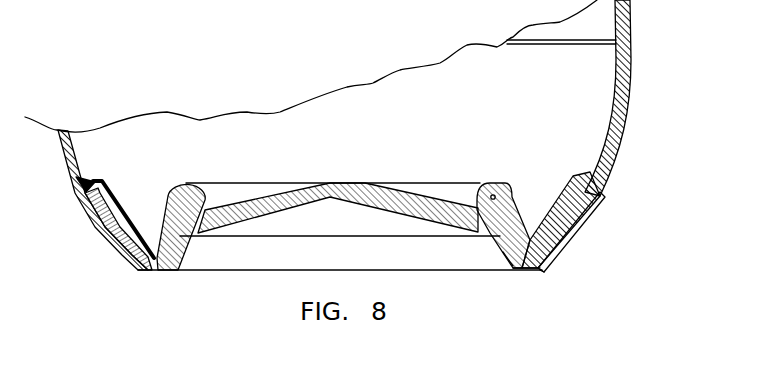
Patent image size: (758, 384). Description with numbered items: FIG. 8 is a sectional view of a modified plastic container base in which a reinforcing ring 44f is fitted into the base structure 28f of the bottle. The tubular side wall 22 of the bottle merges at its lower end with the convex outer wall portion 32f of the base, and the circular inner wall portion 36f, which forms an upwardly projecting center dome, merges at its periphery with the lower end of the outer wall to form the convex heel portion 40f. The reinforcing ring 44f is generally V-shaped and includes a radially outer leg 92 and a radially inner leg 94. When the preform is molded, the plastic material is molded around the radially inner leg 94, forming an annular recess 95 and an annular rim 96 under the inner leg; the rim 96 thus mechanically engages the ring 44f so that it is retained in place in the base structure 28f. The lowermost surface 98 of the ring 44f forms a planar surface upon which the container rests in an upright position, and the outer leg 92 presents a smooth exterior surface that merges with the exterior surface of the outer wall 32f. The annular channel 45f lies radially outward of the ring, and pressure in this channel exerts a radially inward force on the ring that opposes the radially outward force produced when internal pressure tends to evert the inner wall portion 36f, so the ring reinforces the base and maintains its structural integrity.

The tubular side wall 22 is at (631, 30).
The base structure 28f is at (600, 247).
The convex outer wall portion 32f is at (617, 150).
The inner wall portion 36f is at (327, 183).
The heel portion 40f is at (147, 237).
The reinforcing ring 44f is at (503, 252).
The annular channel 45f is at (133, 206).
The radially outer leg 92 is at (103, 224).
The radially inner leg 94 is at (195, 184).
The annular recess 95 is at (476, 196).
The annular rim 96 is at (180, 240).
The lowermost surface 98 is at (525, 250).